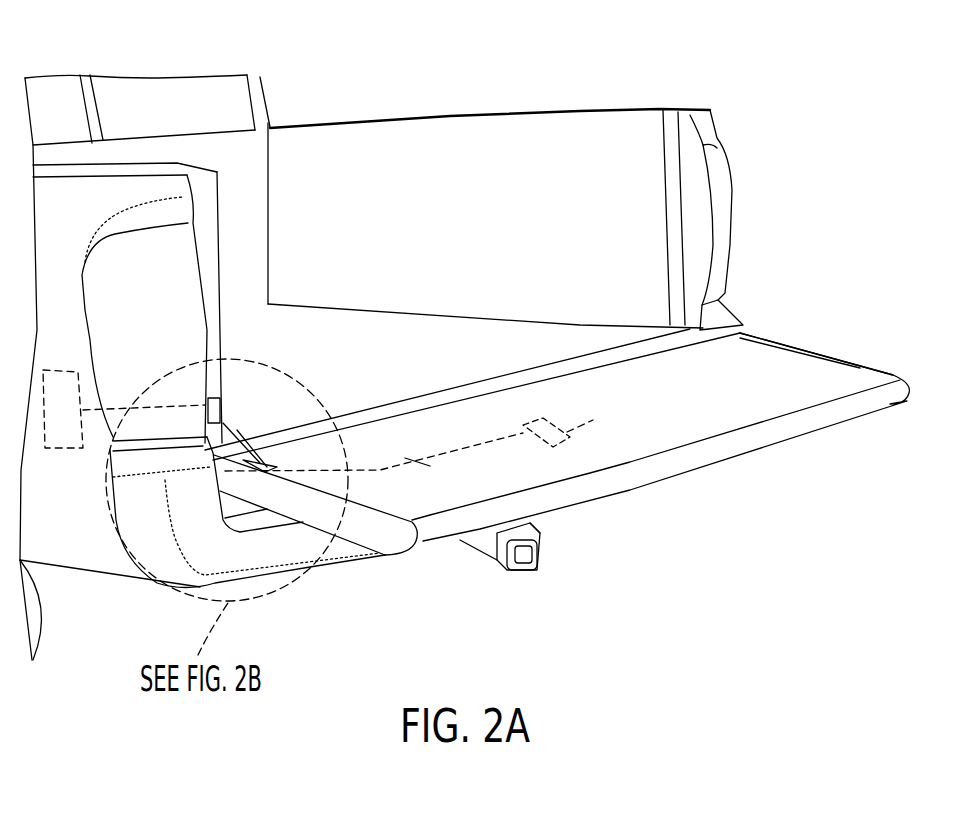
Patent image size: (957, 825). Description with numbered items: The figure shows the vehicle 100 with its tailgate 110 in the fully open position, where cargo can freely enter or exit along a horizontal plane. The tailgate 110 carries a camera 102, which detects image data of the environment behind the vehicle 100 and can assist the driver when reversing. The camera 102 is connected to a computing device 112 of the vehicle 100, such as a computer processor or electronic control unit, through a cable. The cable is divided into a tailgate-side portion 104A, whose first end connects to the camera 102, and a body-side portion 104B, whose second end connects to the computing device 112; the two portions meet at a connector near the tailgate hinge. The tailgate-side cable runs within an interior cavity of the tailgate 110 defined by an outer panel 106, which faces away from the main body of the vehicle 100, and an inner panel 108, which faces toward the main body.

The vehicle 100 is at (288, 88).
The camera 102 is at (597, 420).
The tailgate-side portion 104A is at (421, 462).
The body-side portion 104B is at (180, 403).
The outer panel 106 is at (632, 495).
The inner panel 108 is at (732, 365).
The tailgate 110 is at (773, 367).
The computing device 112 is at (70, 367).